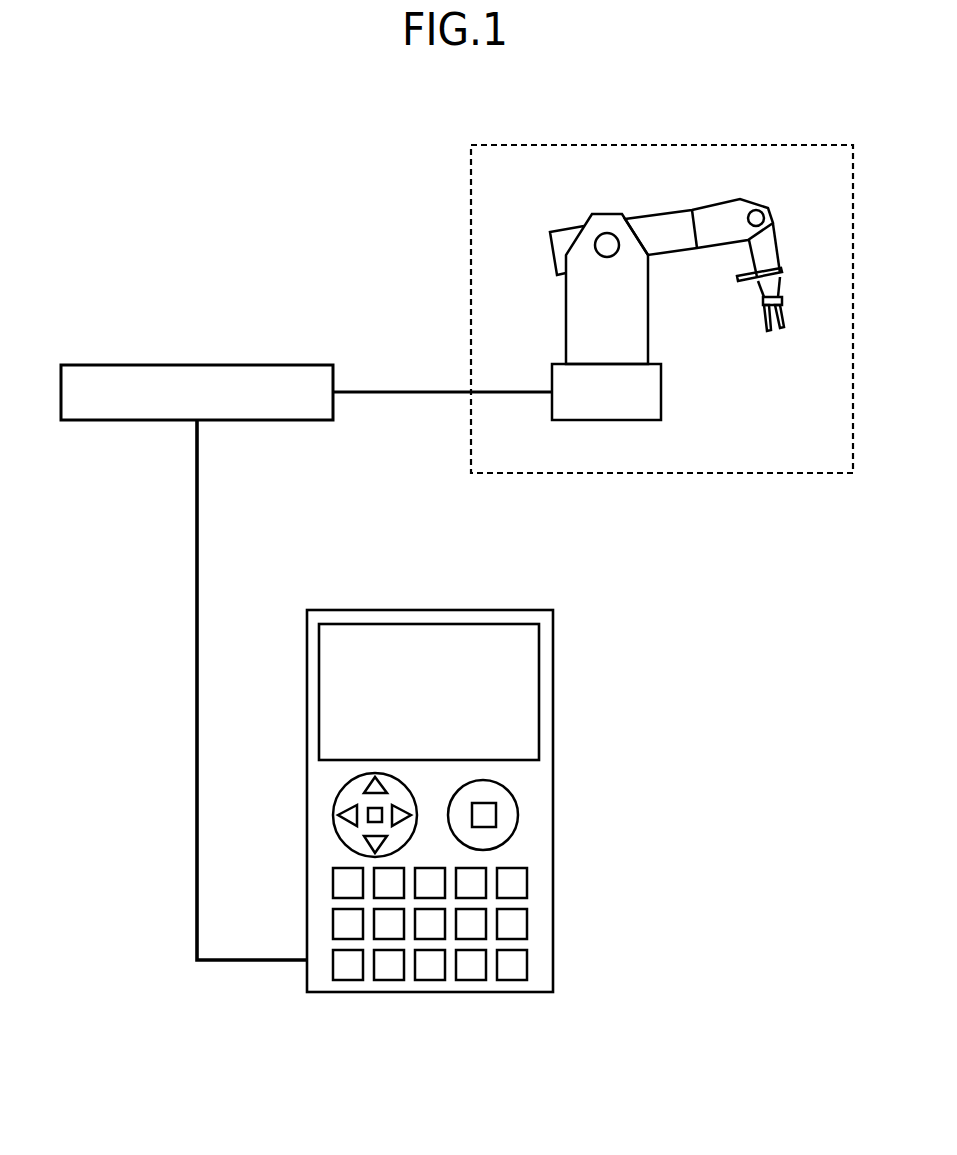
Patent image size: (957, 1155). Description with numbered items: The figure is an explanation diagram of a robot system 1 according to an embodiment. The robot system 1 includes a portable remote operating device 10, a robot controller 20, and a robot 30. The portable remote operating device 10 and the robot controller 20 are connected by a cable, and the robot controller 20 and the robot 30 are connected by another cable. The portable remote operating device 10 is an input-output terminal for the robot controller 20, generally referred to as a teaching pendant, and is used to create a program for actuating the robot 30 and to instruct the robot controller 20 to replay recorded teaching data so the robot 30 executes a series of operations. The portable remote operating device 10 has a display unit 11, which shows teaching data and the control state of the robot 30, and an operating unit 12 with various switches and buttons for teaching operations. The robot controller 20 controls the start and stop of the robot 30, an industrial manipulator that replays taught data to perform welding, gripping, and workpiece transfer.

The robot system 1 is at (164, 143).
The portable remote operating device 10 is at (368, 610).
The display unit 11 is at (522, 683).
The operating unit 12 is at (522, 850).
The robot controller 20 is at (150, 365).
The robot 30 is at (670, 146).